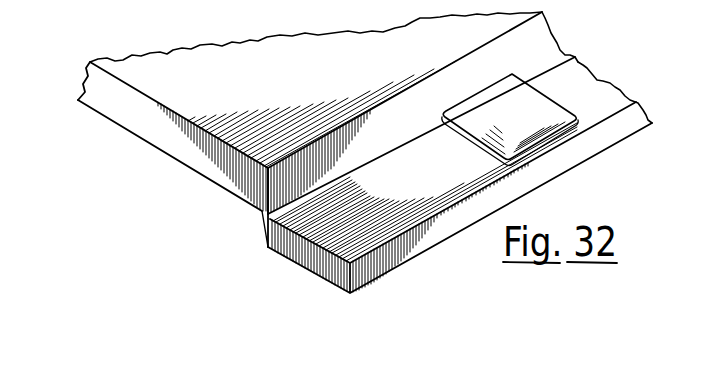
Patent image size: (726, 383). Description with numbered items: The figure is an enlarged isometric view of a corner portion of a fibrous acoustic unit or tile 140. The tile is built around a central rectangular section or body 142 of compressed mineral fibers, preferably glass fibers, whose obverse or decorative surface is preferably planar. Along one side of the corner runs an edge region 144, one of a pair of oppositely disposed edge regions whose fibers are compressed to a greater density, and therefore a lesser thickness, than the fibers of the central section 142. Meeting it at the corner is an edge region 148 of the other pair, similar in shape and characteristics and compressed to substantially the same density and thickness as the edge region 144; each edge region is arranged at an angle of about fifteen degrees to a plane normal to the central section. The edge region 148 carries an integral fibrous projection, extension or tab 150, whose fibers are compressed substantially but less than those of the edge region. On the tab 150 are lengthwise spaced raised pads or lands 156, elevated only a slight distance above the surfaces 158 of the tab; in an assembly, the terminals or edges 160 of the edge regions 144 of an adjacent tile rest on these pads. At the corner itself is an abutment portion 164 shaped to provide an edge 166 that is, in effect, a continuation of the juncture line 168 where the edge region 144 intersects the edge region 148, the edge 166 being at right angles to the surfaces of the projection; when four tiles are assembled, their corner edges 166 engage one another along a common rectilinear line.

The unit or tile 140 is at (150, 150).
The central rectangular section or body 142 is at (288, 93).
The edge regions 144 is at (123, 108).
The edge regions 148 is at (537, 42).
The projections, extensions or tabs 150 is at (373, 281).
The pads or lands 156 is at (523, 97).
The surfaces of the tabs 158 is at (593, 83).
The terminals or edges of the edge regions 160 is at (180, 163).
The abutment portion 164 is at (263, 220).
The edge 166 is at (265, 232).
The juncture line 168 is at (268, 178).